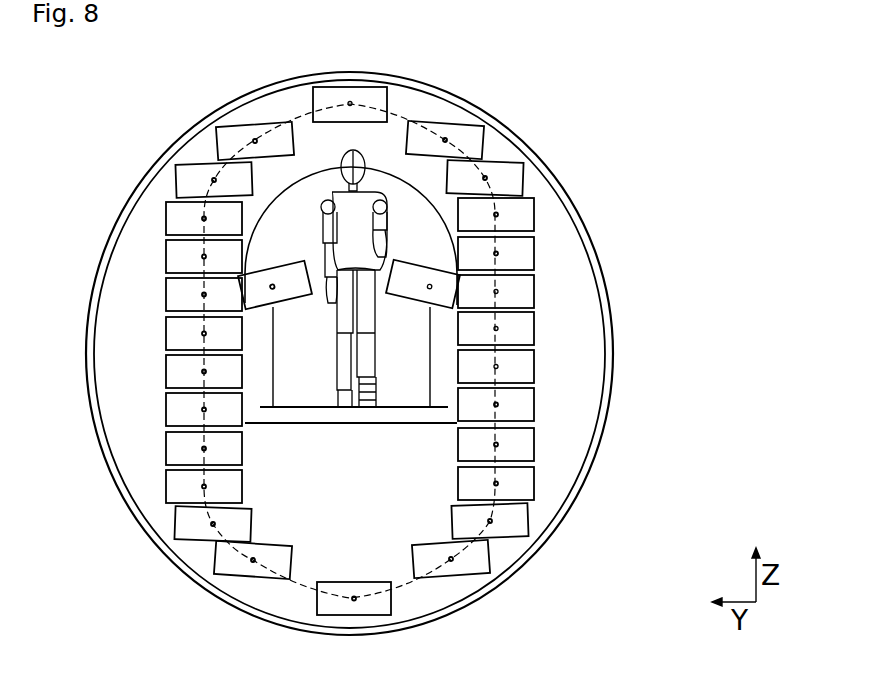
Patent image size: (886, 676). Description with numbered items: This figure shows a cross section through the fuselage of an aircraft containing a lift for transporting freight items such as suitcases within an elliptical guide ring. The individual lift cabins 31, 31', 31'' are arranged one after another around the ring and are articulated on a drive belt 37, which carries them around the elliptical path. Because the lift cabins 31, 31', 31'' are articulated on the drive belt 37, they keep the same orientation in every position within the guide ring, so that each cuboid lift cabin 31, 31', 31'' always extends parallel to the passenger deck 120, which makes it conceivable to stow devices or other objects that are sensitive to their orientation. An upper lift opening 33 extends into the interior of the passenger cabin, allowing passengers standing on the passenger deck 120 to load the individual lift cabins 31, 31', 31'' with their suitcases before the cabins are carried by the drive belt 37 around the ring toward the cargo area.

The drive belt 37 is at (392, 111).
The lift cabin 31 is at (581, 239).
The upper lift opening 33 is at (438, 306).
The lift cabin 31' is at (606, 386).
The lift cabin 31'' is at (598, 455).
The passenger deck 120 is at (357, 415).